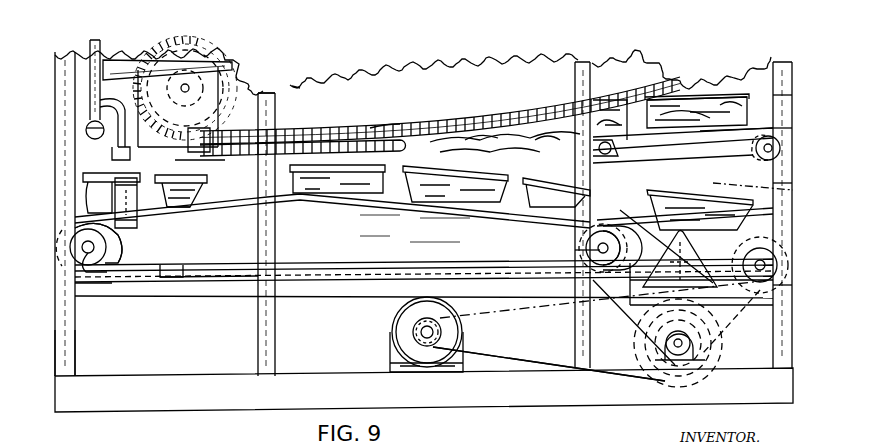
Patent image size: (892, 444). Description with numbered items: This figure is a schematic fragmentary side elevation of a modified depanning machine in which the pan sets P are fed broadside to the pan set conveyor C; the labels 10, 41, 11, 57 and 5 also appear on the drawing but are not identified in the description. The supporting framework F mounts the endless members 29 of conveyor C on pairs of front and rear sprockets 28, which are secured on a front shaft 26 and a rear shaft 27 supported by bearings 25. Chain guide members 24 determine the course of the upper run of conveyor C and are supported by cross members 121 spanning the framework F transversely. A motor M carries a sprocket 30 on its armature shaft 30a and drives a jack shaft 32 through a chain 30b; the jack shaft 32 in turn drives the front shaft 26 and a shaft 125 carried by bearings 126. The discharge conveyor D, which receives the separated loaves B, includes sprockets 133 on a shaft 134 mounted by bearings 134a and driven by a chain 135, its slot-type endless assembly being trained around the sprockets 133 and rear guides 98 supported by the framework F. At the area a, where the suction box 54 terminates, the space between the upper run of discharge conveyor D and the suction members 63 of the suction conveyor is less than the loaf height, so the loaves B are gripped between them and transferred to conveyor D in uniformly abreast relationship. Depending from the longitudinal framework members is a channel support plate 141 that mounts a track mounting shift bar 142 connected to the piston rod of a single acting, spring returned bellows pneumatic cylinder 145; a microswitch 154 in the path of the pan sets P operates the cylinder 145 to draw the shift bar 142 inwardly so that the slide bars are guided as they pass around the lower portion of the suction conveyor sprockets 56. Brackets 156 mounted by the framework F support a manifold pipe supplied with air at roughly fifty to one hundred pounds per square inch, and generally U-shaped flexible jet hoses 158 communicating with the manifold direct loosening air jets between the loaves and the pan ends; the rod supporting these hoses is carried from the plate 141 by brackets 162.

The apparatus 10 is at (37, 172).
The plate 41 is at (130, 62).
The suction box 54 is at (303, 128).
The section line 11 is at (235, 24).
The suction conveyor sprockets 56 is at (262, 92).
The channel support plate 141 is at (296, 86).
The chain link 57 is at (383, 125).
The material 5 is at (485, 106).
The bread loaves B is at (553, 130).
The suction members 63 is at (683, 87).
The discharge conveyor D is at (768, 118).
The sprockets 133 is at (788, 100).
The shaft 134 is at (788, 130).
The bearings 134a is at (750, 178).
The chain 135 is at (786, 183).
The rear guides 98 is at (574, 166).
The transfer area a is at (627, 160).
The bearings 25 is at (112, 275).
The sprockets 28 is at (120, 242).
The front shaft 26 is at (575, 250).
The endless members 29 is at (345, 196).
The pan sets P is at (400, 196).
The track mounting shift bar 142 is at (205, 170).
The bellows pneumatic cylinder 145 is at (170, 207).
The microswitch 154 is at (116, 178).
The brackets 162 is at (192, 152).
The jet hoses 158 is at (90, 95).
The brackets 156 is at (88, 130).
The pan set conveyor C is at (53, 248).
The rear shaft 27 is at (88, 283).
The cross members 121 is at (178, 280).
The chain guide members 24 is at (336, 258).
The motor M is at (396, 319).
The sprocket 30 is at (413, 340).
The armature shaft 30a is at (455, 332).
The chain 30b is at (515, 366).
The jack shaft 32 is at (678, 352).
The bearings 126 is at (737, 312).
The shaft 125 is at (748, 290).
The supporting framework F is at (53, 350).